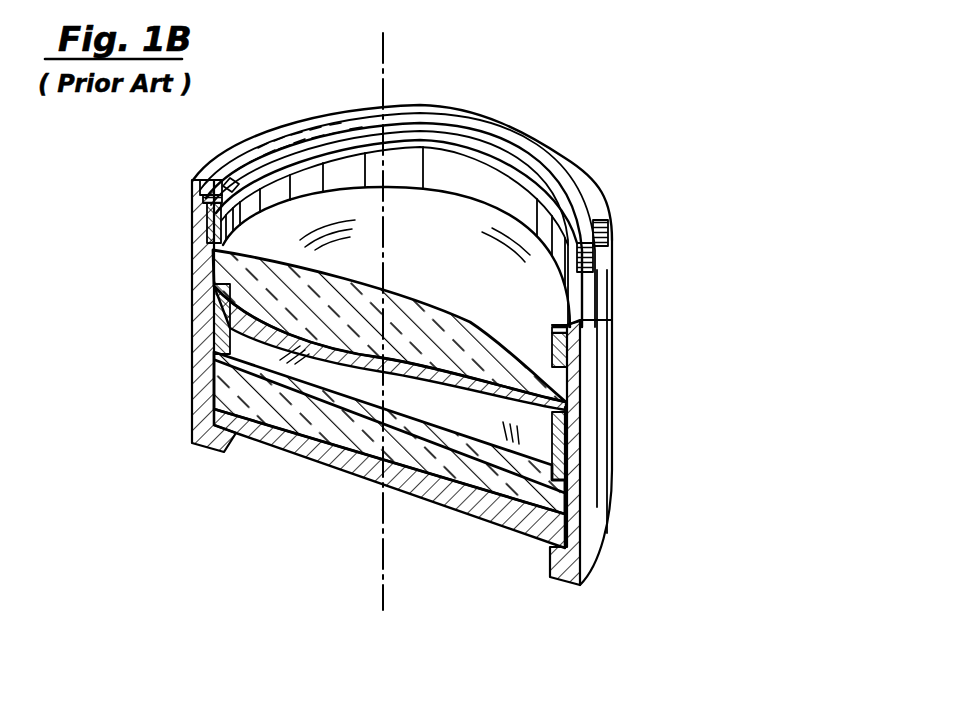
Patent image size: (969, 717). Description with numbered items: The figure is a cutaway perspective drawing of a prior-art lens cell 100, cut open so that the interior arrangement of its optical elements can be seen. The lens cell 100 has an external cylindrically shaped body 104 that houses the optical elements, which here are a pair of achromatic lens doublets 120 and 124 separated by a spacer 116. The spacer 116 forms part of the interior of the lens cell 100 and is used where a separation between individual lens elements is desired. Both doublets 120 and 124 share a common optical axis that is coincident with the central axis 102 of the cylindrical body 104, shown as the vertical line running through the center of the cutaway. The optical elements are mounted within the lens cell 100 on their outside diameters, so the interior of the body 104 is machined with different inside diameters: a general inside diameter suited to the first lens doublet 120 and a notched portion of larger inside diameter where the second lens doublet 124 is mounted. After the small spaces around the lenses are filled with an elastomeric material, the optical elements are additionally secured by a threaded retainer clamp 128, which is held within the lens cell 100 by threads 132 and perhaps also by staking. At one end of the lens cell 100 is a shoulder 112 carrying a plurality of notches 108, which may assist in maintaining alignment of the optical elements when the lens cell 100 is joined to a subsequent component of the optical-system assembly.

The lens cell 100 is at (664, 220).
The central axis 102 is at (383, 59).
The external cylindrically shaped body 104 is at (600, 479).
The notches 108 is at (526, 184).
The shoulder 112 is at (567, 198).
The spacer 116 is at (213, 344).
The first lens doublet 120 is at (446, 497).
The second lens doublet 124 is at (408, 330).
The threaded retainer clamp 128 is at (207, 235).
The threads 132 is at (582, 337).